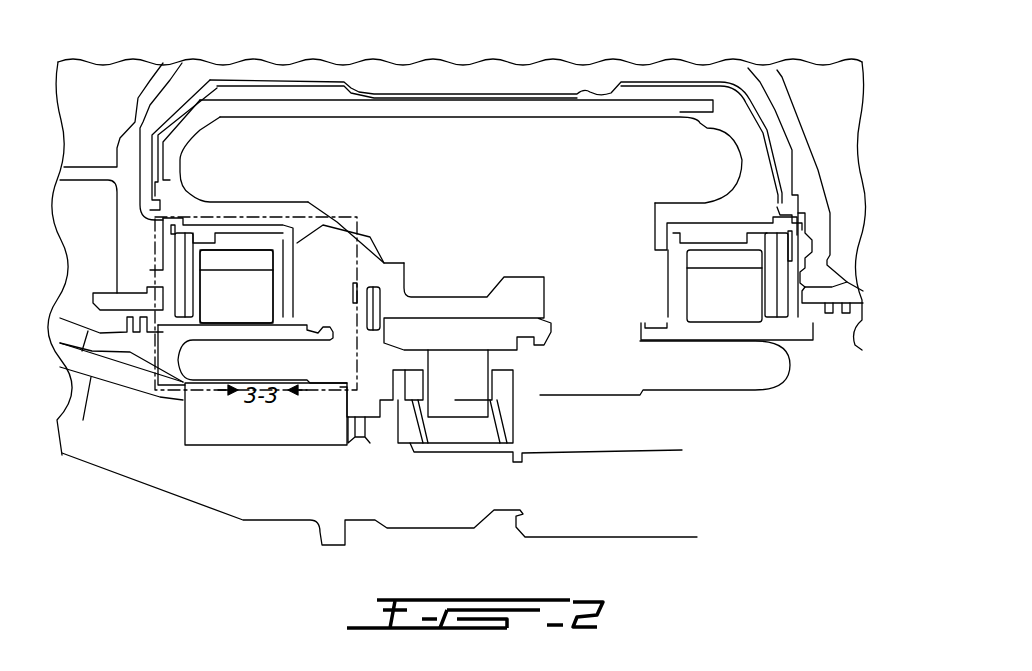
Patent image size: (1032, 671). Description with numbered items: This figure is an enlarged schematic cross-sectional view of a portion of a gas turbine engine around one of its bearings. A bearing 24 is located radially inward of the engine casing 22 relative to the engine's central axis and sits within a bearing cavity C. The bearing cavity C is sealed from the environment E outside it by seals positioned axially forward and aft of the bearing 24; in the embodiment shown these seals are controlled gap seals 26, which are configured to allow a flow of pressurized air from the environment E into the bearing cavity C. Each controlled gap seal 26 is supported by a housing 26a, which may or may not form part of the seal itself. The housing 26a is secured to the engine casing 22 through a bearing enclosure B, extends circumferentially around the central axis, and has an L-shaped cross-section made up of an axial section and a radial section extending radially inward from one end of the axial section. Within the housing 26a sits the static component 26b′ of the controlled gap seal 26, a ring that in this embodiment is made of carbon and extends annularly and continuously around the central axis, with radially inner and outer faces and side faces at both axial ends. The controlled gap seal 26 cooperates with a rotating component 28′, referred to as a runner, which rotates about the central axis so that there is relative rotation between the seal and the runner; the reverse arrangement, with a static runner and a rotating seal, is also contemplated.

The bearing enclosure B is at (432, 107).
The engine casing 22 is at (770, 72).
The controlled gap seal 26 is at (248, 222).
The housing 26a is at (275, 232).
The static component 26b′ is at (230, 292).
The environment E is at (43, 262).
The bearing cavity C is at (716, 380).
The bearing 24 is at (466, 398).
The rotating component 28′ is at (167, 347).